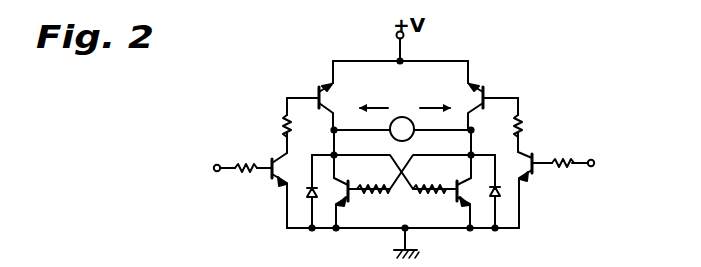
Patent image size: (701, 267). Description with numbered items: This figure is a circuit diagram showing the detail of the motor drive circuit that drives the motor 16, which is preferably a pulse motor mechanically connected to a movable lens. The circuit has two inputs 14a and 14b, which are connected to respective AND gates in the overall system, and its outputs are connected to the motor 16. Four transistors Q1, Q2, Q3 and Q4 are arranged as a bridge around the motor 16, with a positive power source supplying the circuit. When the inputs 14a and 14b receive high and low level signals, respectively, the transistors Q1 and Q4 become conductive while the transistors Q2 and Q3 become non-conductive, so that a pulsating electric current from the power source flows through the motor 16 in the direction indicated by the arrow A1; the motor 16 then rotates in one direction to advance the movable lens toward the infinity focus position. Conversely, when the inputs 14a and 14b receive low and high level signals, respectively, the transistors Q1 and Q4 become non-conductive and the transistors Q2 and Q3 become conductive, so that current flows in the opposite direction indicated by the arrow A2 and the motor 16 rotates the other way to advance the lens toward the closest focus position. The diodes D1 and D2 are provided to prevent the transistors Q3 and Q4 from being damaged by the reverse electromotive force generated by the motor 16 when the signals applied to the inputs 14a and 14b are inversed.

The input 14a is at (212, 165).
The input 14b is at (596, 160).
The motor 16 is at (413, 134).
The transistor Q1 is at (316, 88).
The transistor Q2 is at (480, 88).
The transistor Q3 is at (346, 200).
The transistor Q4 is at (458, 200).
The diode D1 is at (306, 195).
The diode D2 is at (498, 192).
The arrow A1 is at (435, 94).
The arrow A2 is at (374, 94).